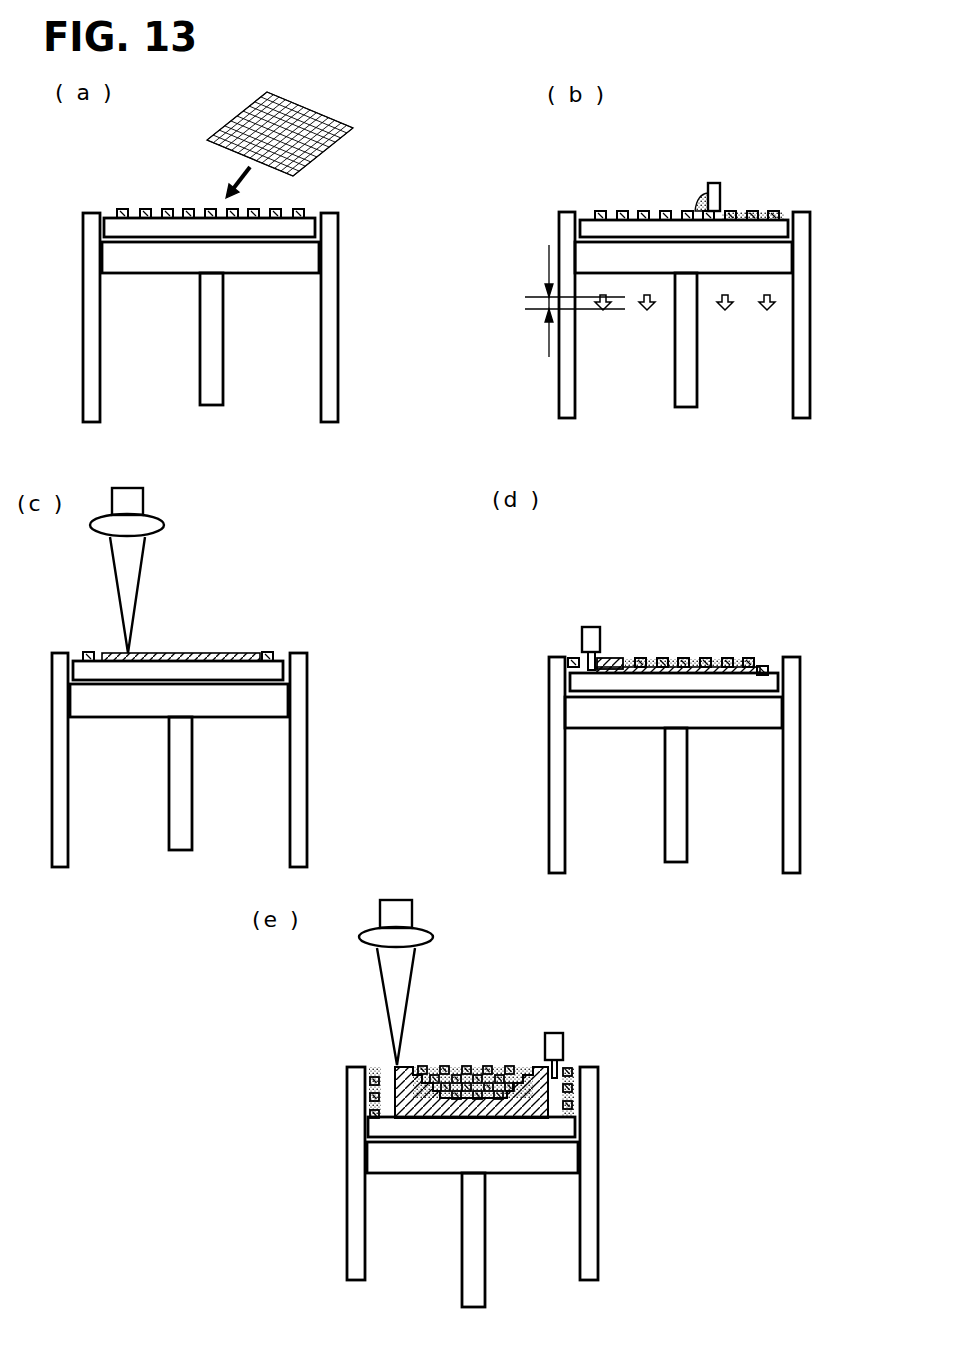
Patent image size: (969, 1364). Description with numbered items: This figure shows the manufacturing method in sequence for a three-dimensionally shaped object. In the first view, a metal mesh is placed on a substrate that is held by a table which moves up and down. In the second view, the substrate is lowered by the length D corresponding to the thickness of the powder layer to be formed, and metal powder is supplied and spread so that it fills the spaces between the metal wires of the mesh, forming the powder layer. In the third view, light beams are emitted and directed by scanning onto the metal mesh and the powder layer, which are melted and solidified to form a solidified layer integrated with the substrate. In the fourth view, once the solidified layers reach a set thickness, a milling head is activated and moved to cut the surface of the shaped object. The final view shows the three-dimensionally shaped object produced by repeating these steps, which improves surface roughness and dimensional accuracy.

The length D is at (561, 301).